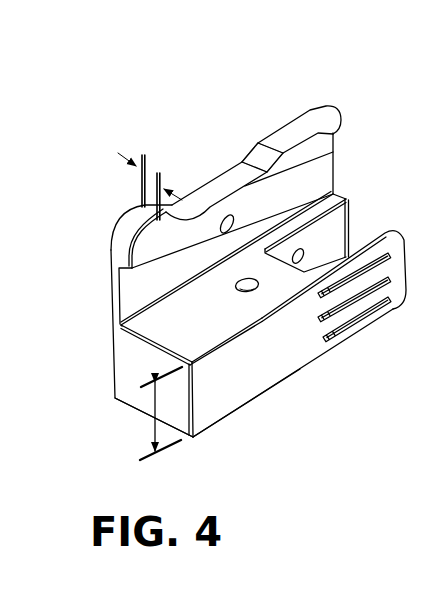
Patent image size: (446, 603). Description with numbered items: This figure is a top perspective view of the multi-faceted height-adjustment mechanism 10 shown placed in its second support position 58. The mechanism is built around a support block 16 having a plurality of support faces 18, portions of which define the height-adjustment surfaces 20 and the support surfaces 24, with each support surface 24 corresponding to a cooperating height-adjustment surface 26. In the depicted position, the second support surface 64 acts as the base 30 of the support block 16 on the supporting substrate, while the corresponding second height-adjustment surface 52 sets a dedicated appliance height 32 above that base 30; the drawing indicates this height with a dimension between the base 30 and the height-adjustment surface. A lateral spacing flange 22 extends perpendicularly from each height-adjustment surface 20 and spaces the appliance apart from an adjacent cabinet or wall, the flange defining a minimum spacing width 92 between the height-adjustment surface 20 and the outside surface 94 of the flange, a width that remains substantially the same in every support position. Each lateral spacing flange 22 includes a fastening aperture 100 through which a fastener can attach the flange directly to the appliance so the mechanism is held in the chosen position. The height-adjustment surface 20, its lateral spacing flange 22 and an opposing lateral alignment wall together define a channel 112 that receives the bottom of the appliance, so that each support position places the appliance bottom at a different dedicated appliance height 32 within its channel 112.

The height-adjustment mechanism 10 is at (168, 78).
The support block 16 is at (106, 411).
The support faces 18 is at (130, 363).
The height-adjustment surfaces 20 is at (263, 270).
The lateral spacing flange 22 is at (125, 240).
The support surfaces 24 is at (330, 351).
The cooperating height-adjustment surface 26 is at (216, 322).
The base 30 is at (272, 390).
The dedicated appliance height 32 is at (153, 408).
The second height-adjustment surface 52 is at (343, 245).
The second support position 58 is at (82, 187).
The second support surface 64 is at (236, 412).
The minimum spacing width 92 is at (156, 176).
The outside surface 94 is at (252, 140).
The fastening aperture 100 is at (118, 284).
The channel 112 is at (138, 336).